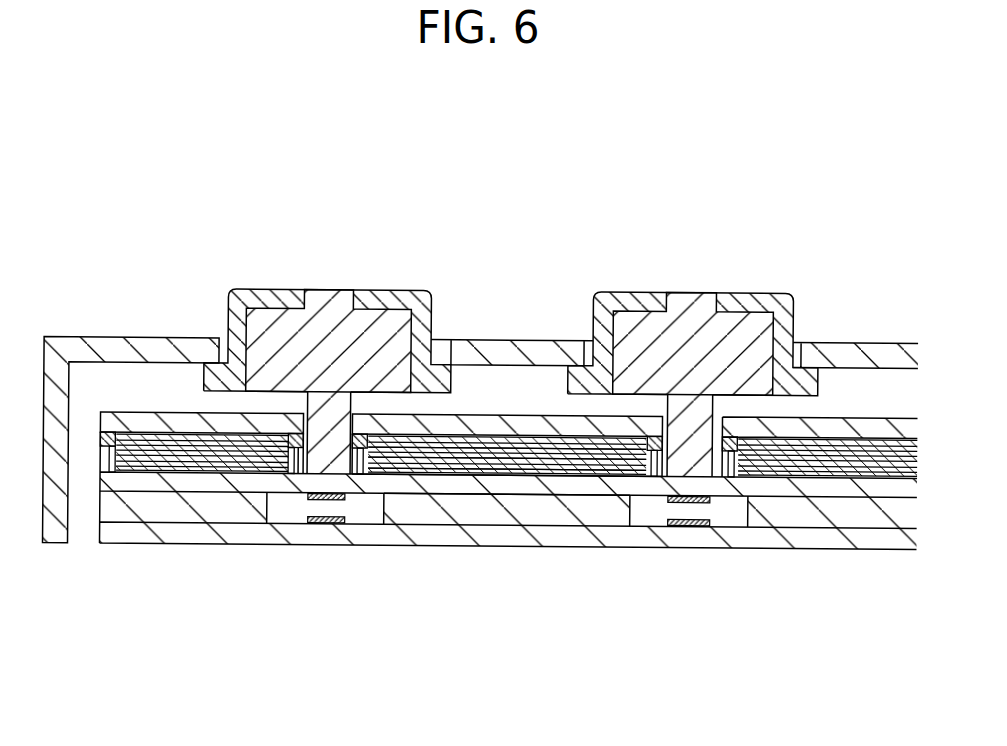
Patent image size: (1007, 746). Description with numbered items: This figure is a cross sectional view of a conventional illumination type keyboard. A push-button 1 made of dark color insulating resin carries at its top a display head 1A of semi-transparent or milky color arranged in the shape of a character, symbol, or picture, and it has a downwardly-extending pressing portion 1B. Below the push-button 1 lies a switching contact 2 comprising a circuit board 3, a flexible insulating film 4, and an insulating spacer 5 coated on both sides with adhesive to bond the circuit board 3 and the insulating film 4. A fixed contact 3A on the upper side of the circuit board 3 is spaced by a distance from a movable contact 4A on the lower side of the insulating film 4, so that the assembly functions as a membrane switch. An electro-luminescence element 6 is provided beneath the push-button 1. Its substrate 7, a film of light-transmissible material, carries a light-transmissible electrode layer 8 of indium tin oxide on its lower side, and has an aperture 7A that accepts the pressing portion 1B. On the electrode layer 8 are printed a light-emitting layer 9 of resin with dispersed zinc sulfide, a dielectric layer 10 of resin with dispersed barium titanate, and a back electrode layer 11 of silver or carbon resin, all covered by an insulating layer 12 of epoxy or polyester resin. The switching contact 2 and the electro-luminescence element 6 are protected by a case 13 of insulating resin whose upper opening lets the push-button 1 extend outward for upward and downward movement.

The push-button 1 is at (243, 293).
The display head 1A is at (327, 290).
The pressing portion 1B is at (333, 422).
The switching contact 2 is at (327, 638).
The circuit board 3 is at (218, 532).
The fixed contact 3A is at (320, 520).
The flexible insulating film 4 is at (120, 482).
The movable contact 4A is at (310, 497).
The insulating spacer 5 is at (163, 512).
The electro-luminescence element 6 is at (360, 650).
The substrate 7 is at (398, 430).
The aperture 7A is at (355, 415).
The light-transmissible electrode layer 8 is at (440, 438).
The light-emitting layer 9 is at (487, 455).
The dielectric layer 10 is at (522, 462).
The back electrode layer 11 is at (562, 470).
The insulating layer 12 is at (597, 462).
The case 13 is at (500, 340).